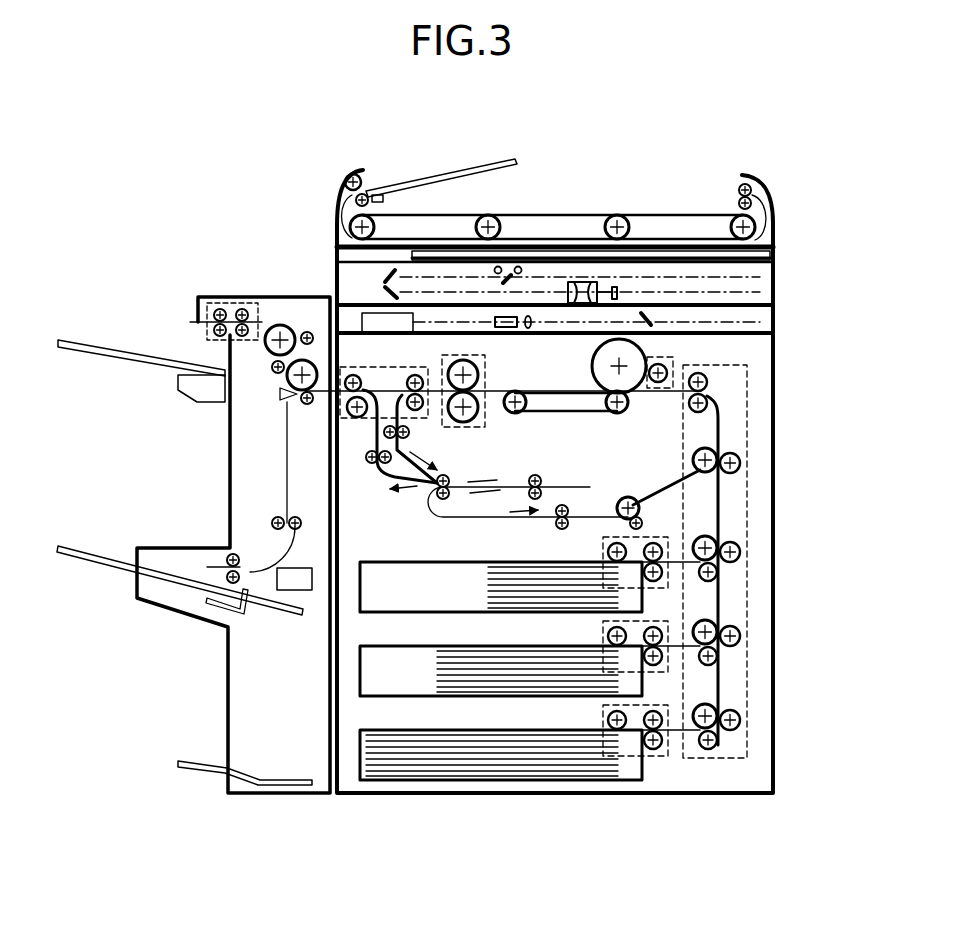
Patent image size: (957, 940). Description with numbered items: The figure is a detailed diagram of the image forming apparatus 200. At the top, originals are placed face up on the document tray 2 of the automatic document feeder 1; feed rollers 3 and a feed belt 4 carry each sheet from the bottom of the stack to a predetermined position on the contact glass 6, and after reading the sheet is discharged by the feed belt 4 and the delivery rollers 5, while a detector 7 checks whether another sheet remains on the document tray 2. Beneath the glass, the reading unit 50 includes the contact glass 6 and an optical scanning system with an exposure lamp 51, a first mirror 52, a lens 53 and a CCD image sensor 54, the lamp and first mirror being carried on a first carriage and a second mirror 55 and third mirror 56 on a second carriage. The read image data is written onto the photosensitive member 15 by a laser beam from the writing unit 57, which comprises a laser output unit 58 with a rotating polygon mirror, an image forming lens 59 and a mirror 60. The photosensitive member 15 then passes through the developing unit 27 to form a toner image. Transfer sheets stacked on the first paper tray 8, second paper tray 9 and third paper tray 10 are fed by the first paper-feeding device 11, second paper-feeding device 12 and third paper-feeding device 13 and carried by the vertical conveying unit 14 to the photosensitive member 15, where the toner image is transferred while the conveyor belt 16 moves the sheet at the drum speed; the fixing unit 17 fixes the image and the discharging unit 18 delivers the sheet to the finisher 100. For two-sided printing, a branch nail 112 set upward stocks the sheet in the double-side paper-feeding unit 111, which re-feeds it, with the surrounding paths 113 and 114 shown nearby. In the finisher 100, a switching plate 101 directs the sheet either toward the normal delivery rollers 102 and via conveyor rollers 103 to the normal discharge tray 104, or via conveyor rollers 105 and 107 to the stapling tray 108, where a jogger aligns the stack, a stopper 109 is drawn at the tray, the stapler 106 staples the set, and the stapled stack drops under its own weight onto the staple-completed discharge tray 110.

The image forming apparatus 200 is at (792, 180).
The automatic document feeder 1 is at (776, 226).
The document tray 2 is at (412, 183).
The feed rollers 3 is at (362, 192).
The feed belt 4 is at (552, 243).
The delivery rollers 5 is at (738, 190).
The contact glass 6 is at (742, 254).
The detector 7 is at (386, 198).
The reading unit 50 is at (752, 287).
The exposure lamp 51 is at (519, 266).
The first mirror 52 is at (513, 278).
The lens 53 is at (600, 288).
The CCD image sensor 54 is at (620, 293).
The second mirror 55 is at (392, 276).
The third mirror 56 is at (392, 291).
The writing unit 57 is at (752, 322).
The laser output unit 58 is at (380, 315).
The image forming lens 59 is at (520, 333).
The mirror 60 is at (652, 322).
The photosensitive member 15 is at (594, 358).
The conveyor belt 16 is at (620, 410).
The fixing unit 17 is at (445, 368).
The discharging unit 18 is at (402, 366).
The developing unit 27 is at (675, 362).
The vertical conveying unit 14 is at (748, 448).
The first paper tray 8 is at (392, 590).
The second paper tray 9 is at (392, 675).
The third paper tray 10 is at (372, 755).
The first paper-feeding device 11 is at (645, 590).
The second paper-feeding device 12 is at (645, 675).
The third paper-feeding device 13 is at (645, 758).
The double-side paper-feeding unit 111 is at (478, 520).
The branch nail 112 is at (525, 477).
The switchback path 113 is at (424, 429).
The re-feed path 114 is at (365, 440).
The finisher 100 is at (228, 700).
The switching plate 101 is at (280, 398).
The normal delivery rollers 102 is at (285, 382).
The conveyor rollers 103 is at (225, 303).
The normal discharge tray 104 is at (90, 342).
The conveyor rollers 105 is at (275, 520).
The stapler 106 is at (287, 592).
The conveyor rollers 107 is at (232, 553).
The stapling tray 108 is at (92, 546).
The stopper 109 is at (212, 604).
The staple-completed discharge tray 110 is at (178, 762).